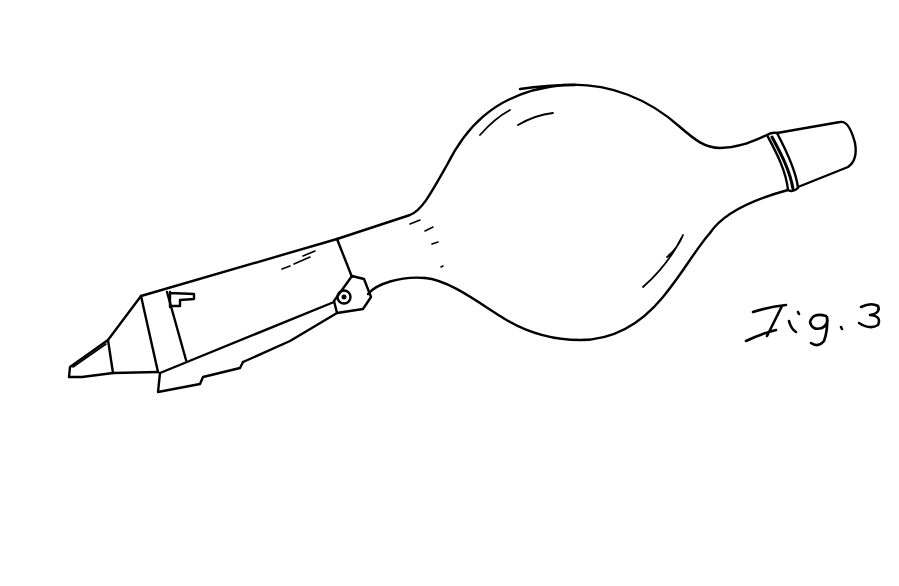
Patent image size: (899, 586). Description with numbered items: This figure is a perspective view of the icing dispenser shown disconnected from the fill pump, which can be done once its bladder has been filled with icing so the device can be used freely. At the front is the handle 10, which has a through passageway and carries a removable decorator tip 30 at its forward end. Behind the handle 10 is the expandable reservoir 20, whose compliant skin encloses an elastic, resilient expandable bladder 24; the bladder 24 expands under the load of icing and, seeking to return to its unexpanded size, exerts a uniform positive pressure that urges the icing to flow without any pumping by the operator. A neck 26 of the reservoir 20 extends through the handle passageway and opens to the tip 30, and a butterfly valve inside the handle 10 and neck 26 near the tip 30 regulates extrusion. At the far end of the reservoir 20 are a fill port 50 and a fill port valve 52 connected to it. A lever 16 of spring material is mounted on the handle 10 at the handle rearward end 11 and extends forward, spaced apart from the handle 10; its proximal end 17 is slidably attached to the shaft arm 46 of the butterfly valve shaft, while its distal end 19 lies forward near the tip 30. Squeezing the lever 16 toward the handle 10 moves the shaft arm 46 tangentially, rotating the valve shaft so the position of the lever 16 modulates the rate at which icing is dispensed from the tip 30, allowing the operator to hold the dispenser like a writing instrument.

The handle 10 is at (247, 267).
The handle rearward end 11 is at (322, 237).
The shaft arm 46 is at (188, 288).
The tip 30 is at (93, 360).
The lever 16 is at (284, 333).
The lever distal end 19 is at (181, 387).
The lever proximal end 17 is at (333, 314).
The neck 26 is at (393, 283).
The expandable reservoir 20 is at (660, 135).
The expandable bladder 24 is at (563, 90).
The fill port 50 is at (767, 135).
The fill port valve 52 is at (817, 128).